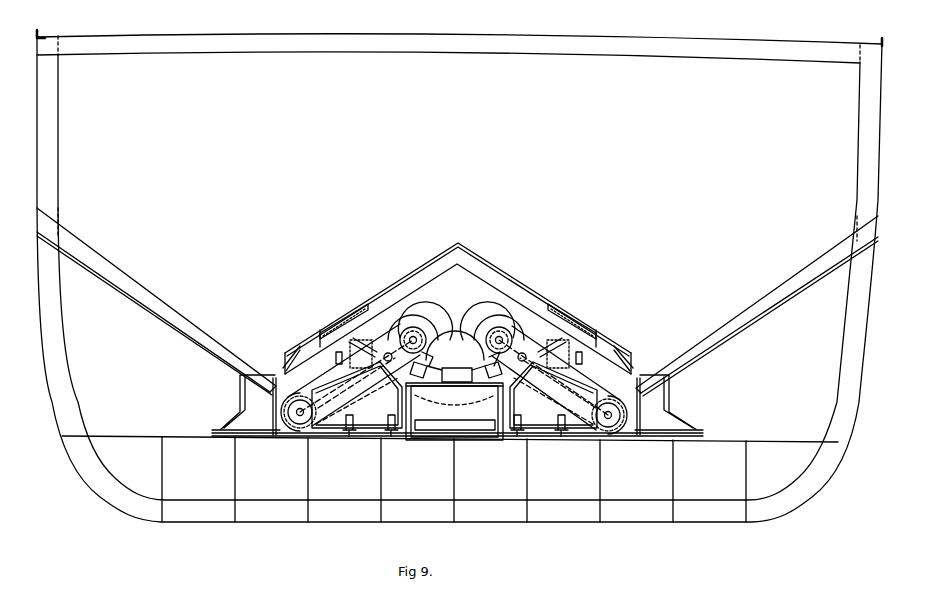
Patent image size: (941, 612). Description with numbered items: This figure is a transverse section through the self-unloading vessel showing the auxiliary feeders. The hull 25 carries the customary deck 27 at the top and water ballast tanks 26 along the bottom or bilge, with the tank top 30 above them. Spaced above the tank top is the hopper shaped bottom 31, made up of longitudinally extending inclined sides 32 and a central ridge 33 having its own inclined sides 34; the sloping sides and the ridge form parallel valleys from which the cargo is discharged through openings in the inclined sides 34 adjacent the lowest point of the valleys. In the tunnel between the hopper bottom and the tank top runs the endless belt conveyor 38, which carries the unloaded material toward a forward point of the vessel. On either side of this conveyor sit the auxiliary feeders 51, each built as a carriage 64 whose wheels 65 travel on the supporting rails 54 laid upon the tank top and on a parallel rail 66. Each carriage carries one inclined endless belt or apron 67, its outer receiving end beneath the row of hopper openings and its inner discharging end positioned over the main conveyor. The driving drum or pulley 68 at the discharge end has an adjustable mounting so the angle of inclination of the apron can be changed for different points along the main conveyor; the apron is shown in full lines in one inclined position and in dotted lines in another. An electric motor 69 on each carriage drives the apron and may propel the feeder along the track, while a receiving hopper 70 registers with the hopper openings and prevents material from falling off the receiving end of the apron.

The hull 25 is at (882, 165).
The water ballast tanks 26 is at (350, 492).
The deck 27 is at (700, 41).
The tank top 30 is at (202, 422).
The hopper shaped bottom 31 is at (670, 353).
The inclined sides 32 is at (162, 293).
The central ridge 33 is at (456, 243).
The inclined sides 34 is at (377, 293).
The endless belt conveyor 38 is at (463, 345).
The auxiliary feeders 51 is at (312, 350).
The supporting rails 54 is at (518, 437).
The carriage 64 is at (540, 417).
The wheels 65 is at (492, 440).
The rail 66 is at (578, 442).
The endless belt or apron 67 is at (545, 326).
The driving drum or pulley 68 is at (496, 330).
The electric motor 69 is at (547, 330).
The receiving hopper 70 is at (596, 380).